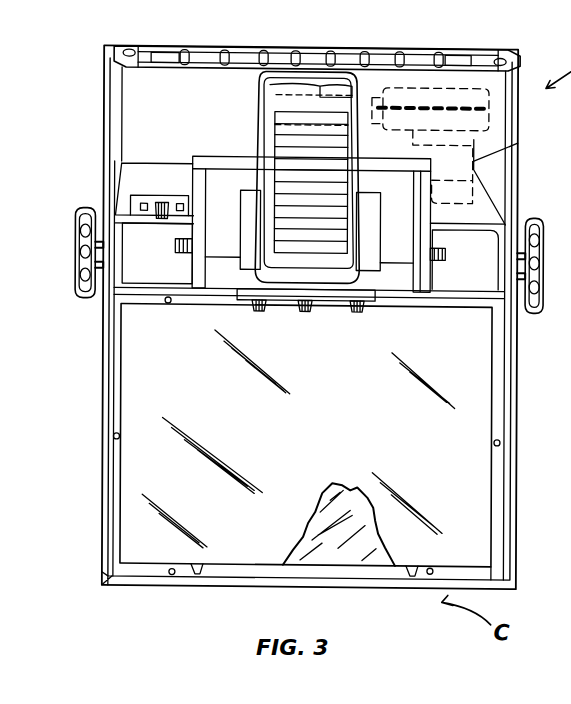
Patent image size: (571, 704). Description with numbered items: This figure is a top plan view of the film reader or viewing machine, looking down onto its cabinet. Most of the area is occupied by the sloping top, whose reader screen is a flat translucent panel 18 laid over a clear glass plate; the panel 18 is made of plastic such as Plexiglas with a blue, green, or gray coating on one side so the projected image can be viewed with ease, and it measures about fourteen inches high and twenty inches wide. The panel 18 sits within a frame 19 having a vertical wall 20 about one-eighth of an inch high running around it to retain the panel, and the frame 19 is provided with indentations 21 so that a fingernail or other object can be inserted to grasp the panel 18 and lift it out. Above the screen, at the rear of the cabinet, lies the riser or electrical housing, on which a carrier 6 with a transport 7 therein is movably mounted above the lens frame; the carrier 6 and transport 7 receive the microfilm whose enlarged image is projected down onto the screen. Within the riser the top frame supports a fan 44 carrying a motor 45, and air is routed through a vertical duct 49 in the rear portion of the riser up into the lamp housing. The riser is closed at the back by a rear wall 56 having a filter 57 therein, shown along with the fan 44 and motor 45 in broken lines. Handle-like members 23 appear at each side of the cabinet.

The carrier 6 is at (398, 289).
The transport 7 is at (246, 221).
The translucent panel 18 is at (398, 447).
The frame 19 is at (114, 460).
The vertical wall 20 is at (489, 518).
The indentations 21 is at (192, 576).
The handle 23 is at (63, 218).
The fan 44 is at (442, 84).
The motor 45 is at (517, 141).
The vertical duct 49 is at (332, 73).
The rear wall 56 is at (180, 49).
The filter 57 is at (233, 53).